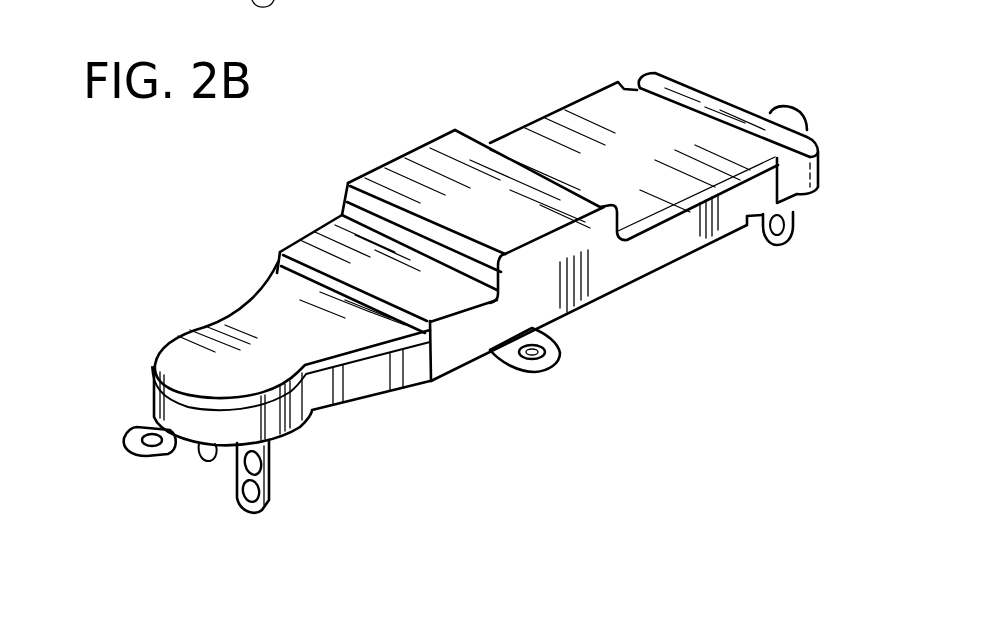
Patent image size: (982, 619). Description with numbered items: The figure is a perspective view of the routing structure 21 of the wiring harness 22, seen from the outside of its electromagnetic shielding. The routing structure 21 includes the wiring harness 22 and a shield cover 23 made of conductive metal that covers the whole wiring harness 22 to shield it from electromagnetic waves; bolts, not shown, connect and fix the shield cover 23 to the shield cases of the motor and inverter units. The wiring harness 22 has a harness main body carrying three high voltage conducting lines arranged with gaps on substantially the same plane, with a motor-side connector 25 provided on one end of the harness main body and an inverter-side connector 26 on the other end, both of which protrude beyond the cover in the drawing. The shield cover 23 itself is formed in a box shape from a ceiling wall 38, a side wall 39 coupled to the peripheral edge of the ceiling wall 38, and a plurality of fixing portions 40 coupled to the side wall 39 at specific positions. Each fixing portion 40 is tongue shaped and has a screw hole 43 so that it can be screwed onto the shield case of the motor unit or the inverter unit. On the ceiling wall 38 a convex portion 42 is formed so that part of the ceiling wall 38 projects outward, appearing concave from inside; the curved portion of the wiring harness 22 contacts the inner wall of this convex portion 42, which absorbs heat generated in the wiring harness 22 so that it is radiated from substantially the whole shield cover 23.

The routing structure 21 is at (437, 500).
The wiring harness 22 is at (275, 468).
The shield cover 23 is at (367, 371).
The motor-side connector 25 is at (773, 247).
The inverter-side connector 26 is at (231, 484).
The ceiling wall 38 is at (560, 128).
The side wall 39 is at (597, 268).
The fixing portion 40 is at (782, 110).
The convex portion 42 is at (413, 170).
The screw hole 43 is at (532, 357).